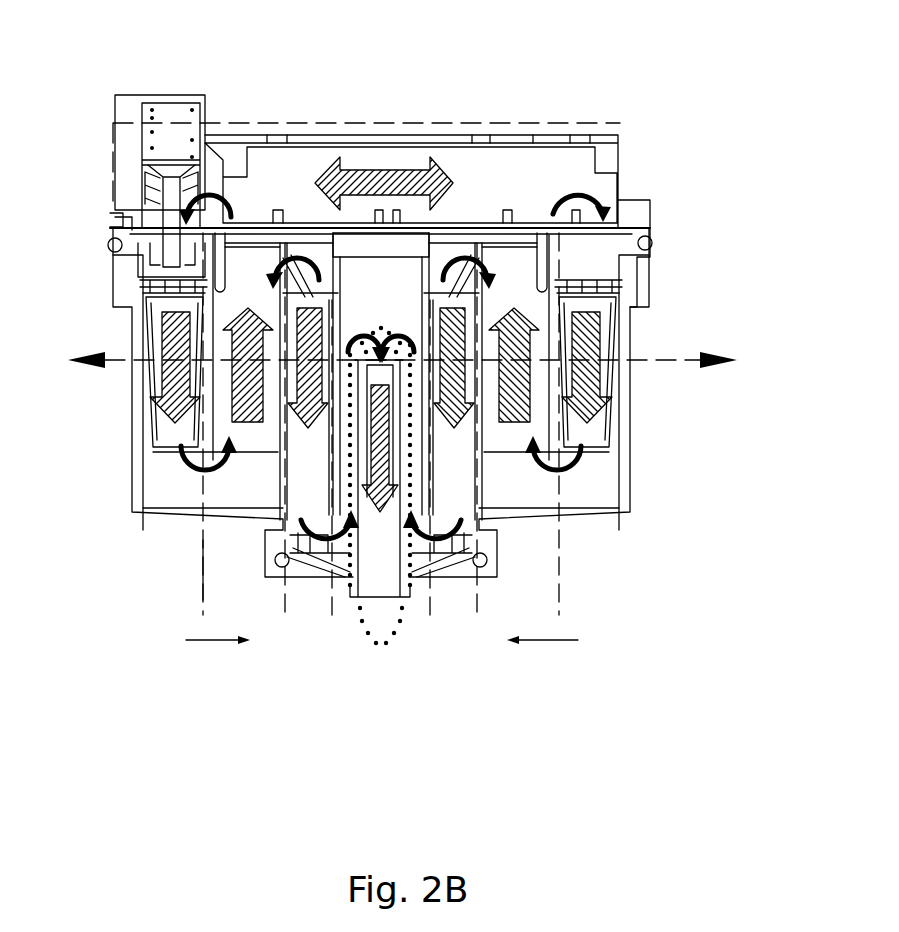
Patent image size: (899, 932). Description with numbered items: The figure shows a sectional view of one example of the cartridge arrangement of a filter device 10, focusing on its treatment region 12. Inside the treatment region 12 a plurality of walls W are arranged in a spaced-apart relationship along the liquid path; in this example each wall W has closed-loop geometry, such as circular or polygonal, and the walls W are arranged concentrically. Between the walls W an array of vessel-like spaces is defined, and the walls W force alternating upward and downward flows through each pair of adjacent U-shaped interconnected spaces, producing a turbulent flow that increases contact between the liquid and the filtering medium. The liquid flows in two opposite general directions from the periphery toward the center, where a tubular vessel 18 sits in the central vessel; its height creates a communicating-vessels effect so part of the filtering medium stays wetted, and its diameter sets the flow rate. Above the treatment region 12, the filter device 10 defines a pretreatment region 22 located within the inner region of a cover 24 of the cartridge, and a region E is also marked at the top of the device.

The filter device 10 is at (660, 72).
The treatment region 12 is at (262, 494).
The tubular vessel 18 is at (372, 542).
The pretreatment region 22 is at (528, 189).
The cover 24 is at (418, 123).
The electronics region E is at (287, 123).
The walls W is at (275, 597).